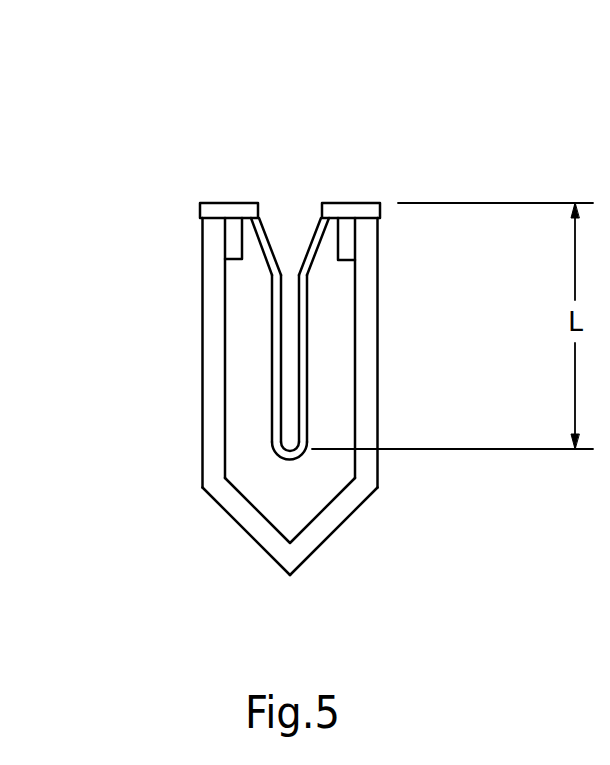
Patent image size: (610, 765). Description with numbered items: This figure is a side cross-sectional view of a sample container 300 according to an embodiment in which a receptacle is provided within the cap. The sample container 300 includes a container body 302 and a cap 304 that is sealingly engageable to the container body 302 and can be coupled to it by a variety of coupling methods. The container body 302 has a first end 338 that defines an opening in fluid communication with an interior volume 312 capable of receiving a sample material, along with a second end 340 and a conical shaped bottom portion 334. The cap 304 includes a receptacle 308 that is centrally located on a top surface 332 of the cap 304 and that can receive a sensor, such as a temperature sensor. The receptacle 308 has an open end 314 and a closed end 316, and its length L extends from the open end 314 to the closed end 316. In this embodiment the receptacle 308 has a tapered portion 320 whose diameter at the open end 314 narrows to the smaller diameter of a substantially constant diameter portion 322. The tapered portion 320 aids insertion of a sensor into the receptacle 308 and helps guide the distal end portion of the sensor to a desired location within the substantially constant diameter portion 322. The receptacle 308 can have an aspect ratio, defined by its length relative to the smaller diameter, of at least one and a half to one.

The sample container 300 is at (482, 127).
The container body 302 is at (380, 370).
The cap 304 is at (352, 203).
The receptacle 308 is at (288, 238).
The interior volume 312 is at (253, 482).
The open end 314 is at (272, 203).
The closed end 316 is at (275, 453).
The tapered portion 320 is at (266, 250).
The substantially constant diameter portion 322 is at (278, 366).
The top surface 332 is at (208, 203).
The conical shaped bottom portion 334 is at (328, 537).
The first end 338 is at (202, 229).
The second end 340 is at (290, 575).